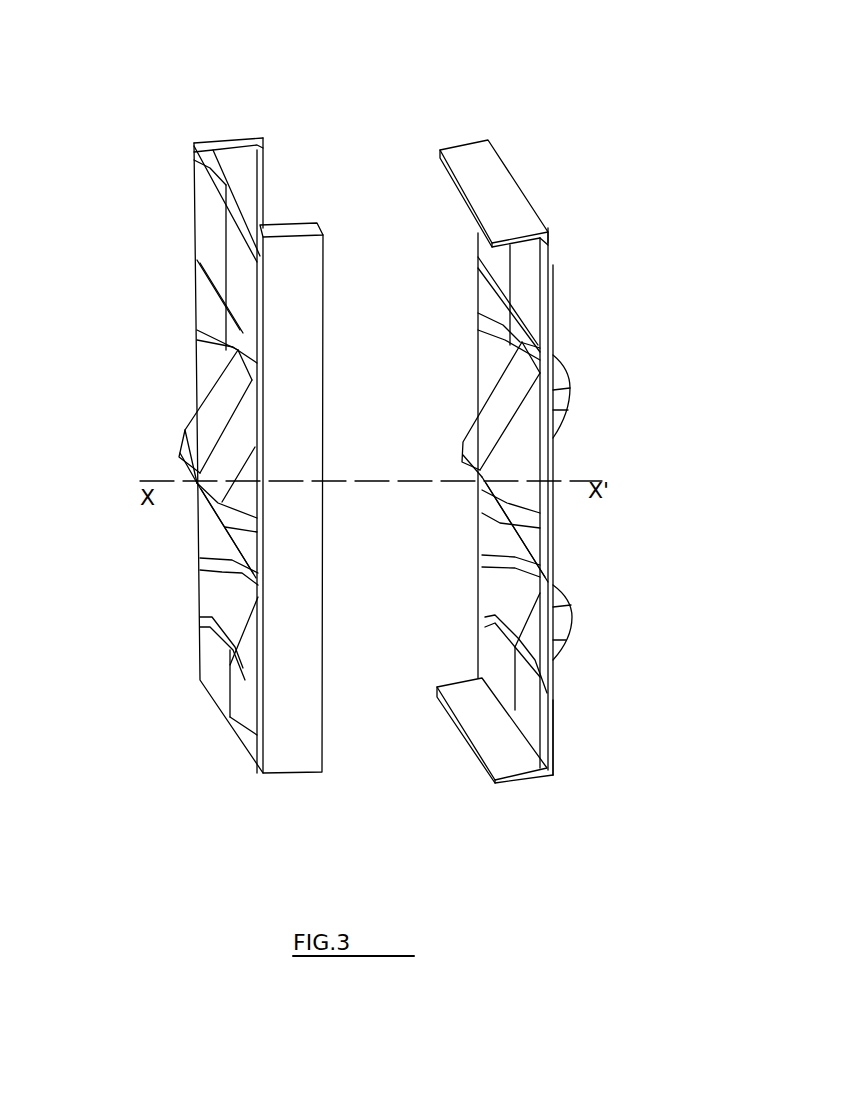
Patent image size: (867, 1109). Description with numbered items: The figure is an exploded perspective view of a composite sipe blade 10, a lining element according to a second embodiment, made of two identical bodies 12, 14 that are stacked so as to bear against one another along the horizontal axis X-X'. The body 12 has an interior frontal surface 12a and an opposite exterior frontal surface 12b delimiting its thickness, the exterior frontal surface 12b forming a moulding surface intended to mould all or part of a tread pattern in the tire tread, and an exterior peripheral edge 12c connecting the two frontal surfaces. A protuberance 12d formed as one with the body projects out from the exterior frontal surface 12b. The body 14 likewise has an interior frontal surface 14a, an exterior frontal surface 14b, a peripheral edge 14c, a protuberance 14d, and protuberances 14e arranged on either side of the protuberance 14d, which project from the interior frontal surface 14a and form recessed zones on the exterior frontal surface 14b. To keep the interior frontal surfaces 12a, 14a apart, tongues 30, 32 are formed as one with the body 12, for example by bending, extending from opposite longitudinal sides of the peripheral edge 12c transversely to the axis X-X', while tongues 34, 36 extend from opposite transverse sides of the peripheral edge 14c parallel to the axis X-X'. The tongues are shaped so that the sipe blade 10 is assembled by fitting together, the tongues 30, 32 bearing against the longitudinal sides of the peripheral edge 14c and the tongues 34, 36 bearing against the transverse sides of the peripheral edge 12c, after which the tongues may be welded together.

The composite sipe blade 10 is at (419, 78).
The body 12 is at (233, 460).
The interior frontal surface 12a is at (247, 199).
The exterior frontal surface 12b is at (203, 662).
The exterior peripheral edge 12c is at (193, 178).
The protuberance 12d is at (184, 440).
The body 14 is at (503, 441).
The interior frontal surface 14a is at (497, 665).
The exterior frontal surface 14b is at (558, 710).
The exterior peripheral edge 14c is at (546, 292).
The protuberance 14d is at (470, 437).
The protuberances 14e is at (567, 397).
The tongue 30 is at (320, 352).
The tongue 32 is at (255, 170).
The tongue 34 is at (462, 717).
The tongue 36 is at (464, 152).